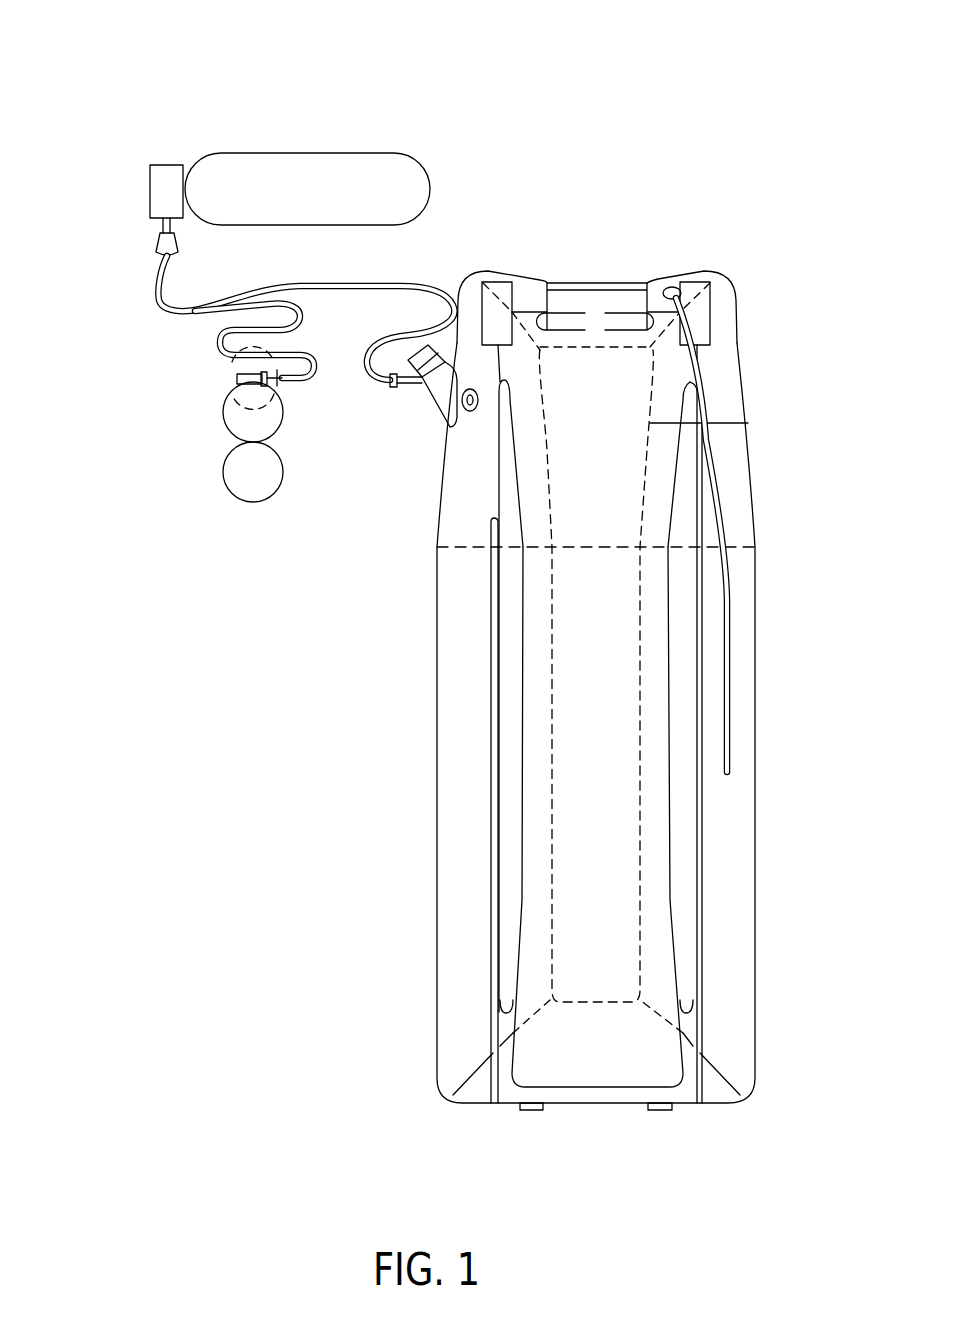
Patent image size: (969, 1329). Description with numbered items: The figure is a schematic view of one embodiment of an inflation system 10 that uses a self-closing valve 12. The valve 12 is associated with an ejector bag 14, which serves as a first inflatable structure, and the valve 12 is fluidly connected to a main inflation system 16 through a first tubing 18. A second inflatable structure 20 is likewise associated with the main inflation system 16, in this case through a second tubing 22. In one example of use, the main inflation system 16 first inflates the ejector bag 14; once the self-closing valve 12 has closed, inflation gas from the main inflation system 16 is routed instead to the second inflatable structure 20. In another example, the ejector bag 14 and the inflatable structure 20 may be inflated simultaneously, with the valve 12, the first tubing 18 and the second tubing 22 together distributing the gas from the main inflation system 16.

The inflation system 10 is at (602, 88).
The self-closing valve 12 is at (237, 388).
The ejector bag 14 is at (237, 468).
The main inflation system 16 is at (423, 162).
The first tubing 18 is at (157, 281).
The inflatable structure 20 is at (783, 283).
The second tubing 22 is at (407, 283).